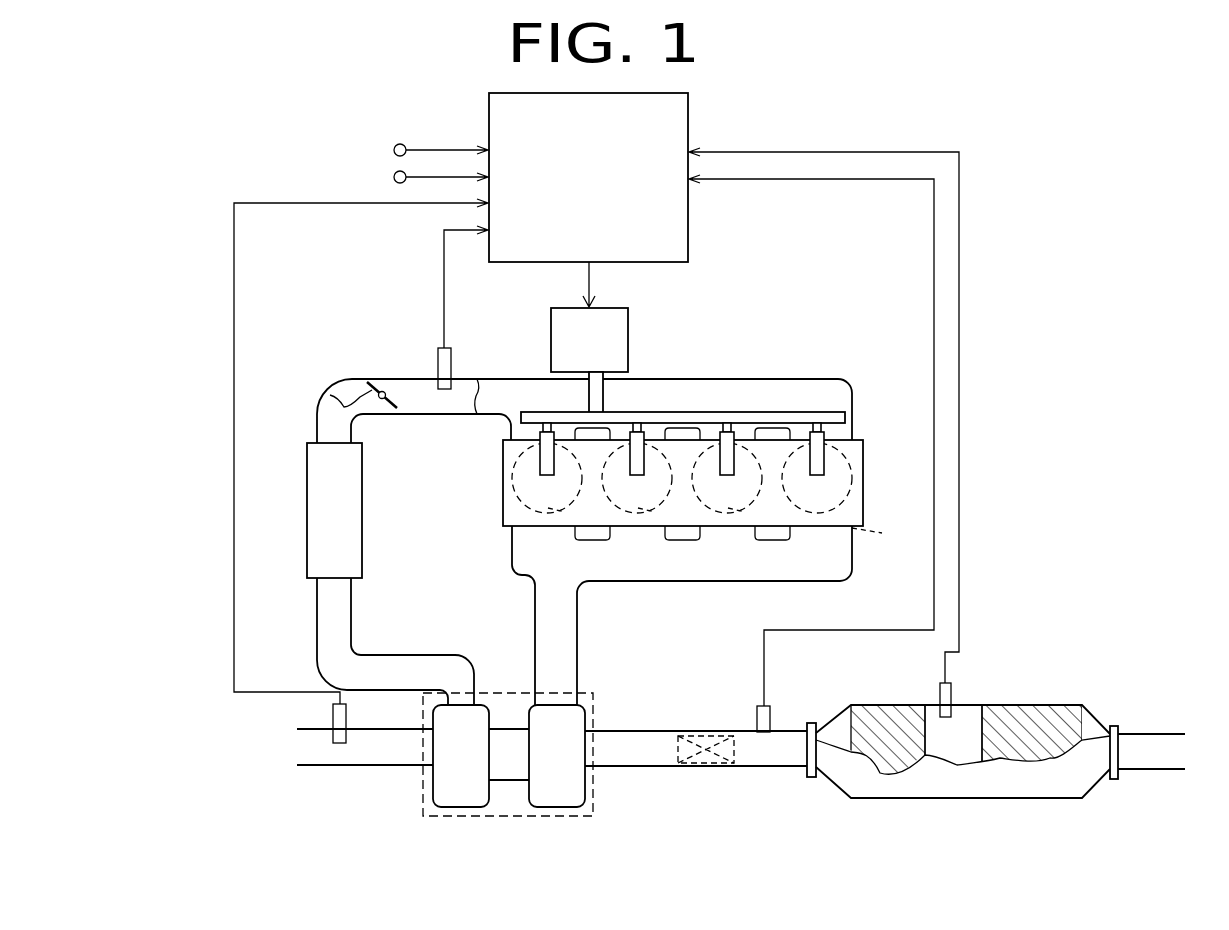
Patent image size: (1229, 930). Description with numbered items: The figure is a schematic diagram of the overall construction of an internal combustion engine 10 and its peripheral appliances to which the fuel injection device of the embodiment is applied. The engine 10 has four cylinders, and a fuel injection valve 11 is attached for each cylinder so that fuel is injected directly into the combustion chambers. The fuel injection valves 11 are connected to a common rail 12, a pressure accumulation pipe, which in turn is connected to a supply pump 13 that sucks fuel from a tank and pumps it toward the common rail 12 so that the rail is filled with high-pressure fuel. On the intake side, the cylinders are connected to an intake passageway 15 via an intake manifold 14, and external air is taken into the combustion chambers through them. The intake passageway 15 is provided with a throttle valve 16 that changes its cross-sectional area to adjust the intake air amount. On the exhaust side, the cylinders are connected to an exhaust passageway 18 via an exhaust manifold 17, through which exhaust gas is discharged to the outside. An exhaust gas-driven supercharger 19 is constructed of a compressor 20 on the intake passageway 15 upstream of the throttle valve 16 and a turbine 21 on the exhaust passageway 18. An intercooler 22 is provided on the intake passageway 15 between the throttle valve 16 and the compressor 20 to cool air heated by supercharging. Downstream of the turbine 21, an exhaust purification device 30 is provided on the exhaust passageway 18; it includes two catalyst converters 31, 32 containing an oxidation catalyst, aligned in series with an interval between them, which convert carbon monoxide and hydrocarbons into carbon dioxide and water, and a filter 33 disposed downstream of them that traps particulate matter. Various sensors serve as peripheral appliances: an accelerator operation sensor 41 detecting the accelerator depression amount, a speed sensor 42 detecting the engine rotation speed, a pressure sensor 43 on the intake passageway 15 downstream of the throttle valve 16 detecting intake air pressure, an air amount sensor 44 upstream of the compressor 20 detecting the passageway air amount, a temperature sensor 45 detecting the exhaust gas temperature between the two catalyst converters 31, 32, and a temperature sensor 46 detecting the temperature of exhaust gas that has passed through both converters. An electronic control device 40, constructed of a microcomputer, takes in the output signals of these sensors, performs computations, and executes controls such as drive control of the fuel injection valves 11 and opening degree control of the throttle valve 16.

The internal combustion engine 10 is at (865, 484).
The fuel injection valve 11 is at (815, 424).
The common rail 12 is at (709, 412).
The supply pump 13 is at (551, 328).
The intake manifold 14 is at (830, 379).
The intake passageway 15 is at (317, 418).
The throttle valve 16 is at (351, 381).
The exhaust manifold 17 is at (766, 582).
The exhaust passageway 18 is at (625, 767).
The supercharger 19 is at (590, 816).
The compressor 20 is at (462, 808).
The turbine 21 is at (557, 808).
The intercooler 22 is at (307, 540).
The exhaust purification device 30 is at (945, 800).
The catalyst converter 31 is at (736, 756).
The catalyst converter 32 is at (898, 766).
The filter 33 is at (1011, 778).
The electronic control device 40 is at (689, 252).
The accelerator operation sensor 41 is at (394, 151).
The speed sensor 42 is at (394, 178).
The pressure sensor 43 is at (438, 358).
The air amount sensor 44 is at (348, 712).
The temperature sensor 45 is at (771, 706).
The temperature sensor 46 is at (952, 688).